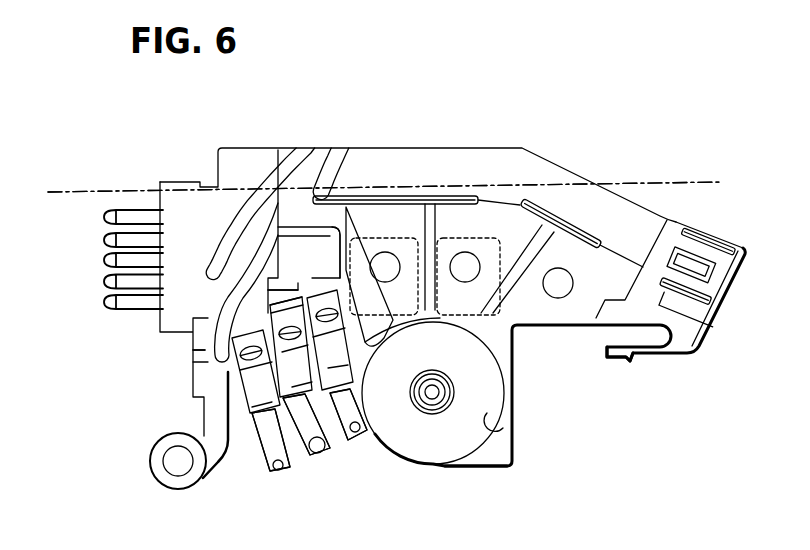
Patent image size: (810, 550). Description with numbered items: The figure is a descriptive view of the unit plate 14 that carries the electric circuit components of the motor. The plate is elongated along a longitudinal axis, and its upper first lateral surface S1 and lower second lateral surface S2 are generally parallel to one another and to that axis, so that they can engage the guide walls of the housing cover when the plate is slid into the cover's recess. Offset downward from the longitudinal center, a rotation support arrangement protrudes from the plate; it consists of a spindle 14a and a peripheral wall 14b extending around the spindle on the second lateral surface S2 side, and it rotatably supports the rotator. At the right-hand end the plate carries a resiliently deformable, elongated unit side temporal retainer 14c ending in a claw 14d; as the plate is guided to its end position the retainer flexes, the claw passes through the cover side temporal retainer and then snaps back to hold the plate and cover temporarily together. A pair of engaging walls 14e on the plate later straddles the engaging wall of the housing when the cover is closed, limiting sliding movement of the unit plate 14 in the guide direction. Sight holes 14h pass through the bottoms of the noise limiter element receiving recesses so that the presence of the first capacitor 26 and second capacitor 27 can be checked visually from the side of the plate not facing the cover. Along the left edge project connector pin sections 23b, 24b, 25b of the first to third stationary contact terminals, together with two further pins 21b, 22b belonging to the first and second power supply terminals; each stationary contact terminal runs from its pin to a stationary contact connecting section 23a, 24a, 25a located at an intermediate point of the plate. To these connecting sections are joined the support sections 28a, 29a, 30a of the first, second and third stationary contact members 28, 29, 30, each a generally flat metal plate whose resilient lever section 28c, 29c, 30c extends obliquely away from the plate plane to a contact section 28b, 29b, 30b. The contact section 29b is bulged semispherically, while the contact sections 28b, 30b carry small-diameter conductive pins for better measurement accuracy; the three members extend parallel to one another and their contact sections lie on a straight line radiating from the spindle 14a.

The unit plate 14 is at (641, 156).
The spindle 14a is at (432, 400).
The peripheral wall 14b is at (512, 431).
The unit side temporal retainer 14c is at (652, 355).
The claw 14d is at (628, 362).
The engaging walls 14e is at (215, 308).
The sight hole 14h is at (395, 280).
The terminal pin 21b is at (106, 216).
The terminal pin 22b is at (106, 240).
The stationary contact connecting section 23a is at (230, 358).
The connector pin section 23b is at (106, 281).
The stationary contact connecting section 24a is at (288, 305).
The connector pin section 24b is at (106, 302).
The stationary contact connecting section 25a is at (326, 292).
The connector pin section 25b is at (106, 260).
The first capacitor 26 is at (425, 260).
The second capacitor 27 is at (545, 223).
The first stationary contact member 28 is at (258, 450).
The support section 28a is at (222, 372).
The contact section 28b is at (279, 472).
The lever section 28c is at (257, 373).
The second stationary contact member 29 is at (294, 433).
The support section 29a is at (270, 318).
The contact section 29b is at (320, 458).
The lever section 29c is at (295, 355).
The third stationary contact member 30 is at (332, 416).
The support section 30a is at (380, 343).
The contact section 30b is at (360, 442).
The lever section 30c is at (332, 337).
The first lateral surface S1 is at (417, 147).
The second lateral surface S2 is at (470, 470).